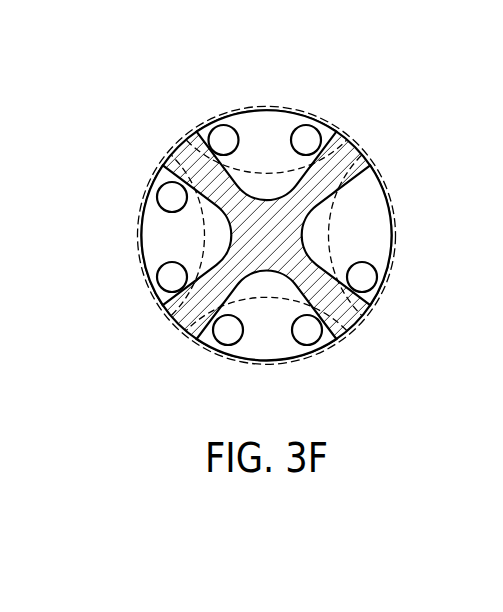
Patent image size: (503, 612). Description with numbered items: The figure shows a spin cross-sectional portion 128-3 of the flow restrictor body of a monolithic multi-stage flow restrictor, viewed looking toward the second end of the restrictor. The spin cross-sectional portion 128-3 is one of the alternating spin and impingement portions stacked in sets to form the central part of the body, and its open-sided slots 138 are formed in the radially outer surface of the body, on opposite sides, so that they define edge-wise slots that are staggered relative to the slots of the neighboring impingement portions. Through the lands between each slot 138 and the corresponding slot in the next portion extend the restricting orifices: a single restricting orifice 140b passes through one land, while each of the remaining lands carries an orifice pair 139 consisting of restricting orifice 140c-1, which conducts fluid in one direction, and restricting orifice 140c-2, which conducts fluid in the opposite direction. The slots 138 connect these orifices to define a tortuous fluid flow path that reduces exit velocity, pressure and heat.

The spin cross-sectional portion 128-3 is at (380, 347).
The open-sided slot 138 is at (258, 130).
The orifice pair 139 is at (295, 110).
The restricting orifice 140b is at (380, 285).
The restricting orifice 140c-1 is at (222, 126).
The restricting orifice 140c-2 is at (310, 127).